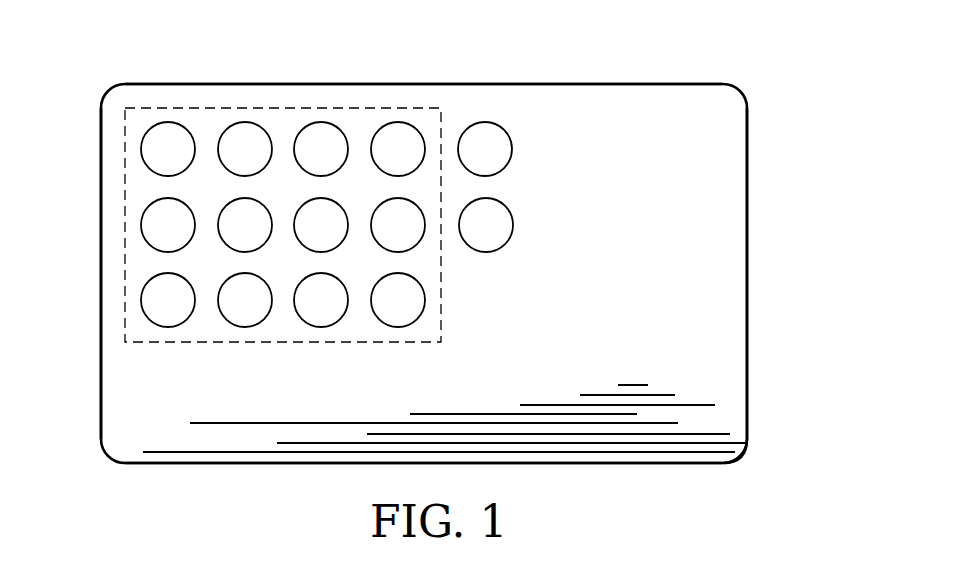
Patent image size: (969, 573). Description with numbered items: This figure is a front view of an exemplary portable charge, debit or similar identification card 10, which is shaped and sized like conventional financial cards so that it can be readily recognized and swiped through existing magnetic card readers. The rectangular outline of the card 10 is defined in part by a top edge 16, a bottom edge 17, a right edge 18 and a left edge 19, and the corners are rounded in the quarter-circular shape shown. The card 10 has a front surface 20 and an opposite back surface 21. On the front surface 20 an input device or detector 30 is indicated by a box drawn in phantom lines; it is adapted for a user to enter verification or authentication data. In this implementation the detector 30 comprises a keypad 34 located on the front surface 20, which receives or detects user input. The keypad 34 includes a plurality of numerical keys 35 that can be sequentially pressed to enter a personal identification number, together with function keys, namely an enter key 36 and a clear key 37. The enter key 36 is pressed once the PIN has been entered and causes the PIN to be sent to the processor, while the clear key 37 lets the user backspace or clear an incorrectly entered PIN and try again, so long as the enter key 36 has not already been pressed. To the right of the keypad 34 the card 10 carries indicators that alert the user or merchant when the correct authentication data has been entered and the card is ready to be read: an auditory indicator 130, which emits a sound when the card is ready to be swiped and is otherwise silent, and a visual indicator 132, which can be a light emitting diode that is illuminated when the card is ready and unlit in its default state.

The card 10 is at (457, 231).
The top edge 16 is at (478, 84).
The bottom edge 17 is at (294, 463).
The right edge 18 is at (747, 390).
The left edge 19 is at (101, 400).
The front surface 20 is at (705, 283).
The back surface 21 is at (747, 122).
The input device 30 is at (277, 186).
The keypad 34 is at (144, 185).
The numerical keys 35 is at (153, 237).
The enter key 36 is at (408, 245).
The clear key 37 is at (410, 313).
The auditory indicator 130 is at (487, 149).
The visual indicator 132 is at (490, 222).